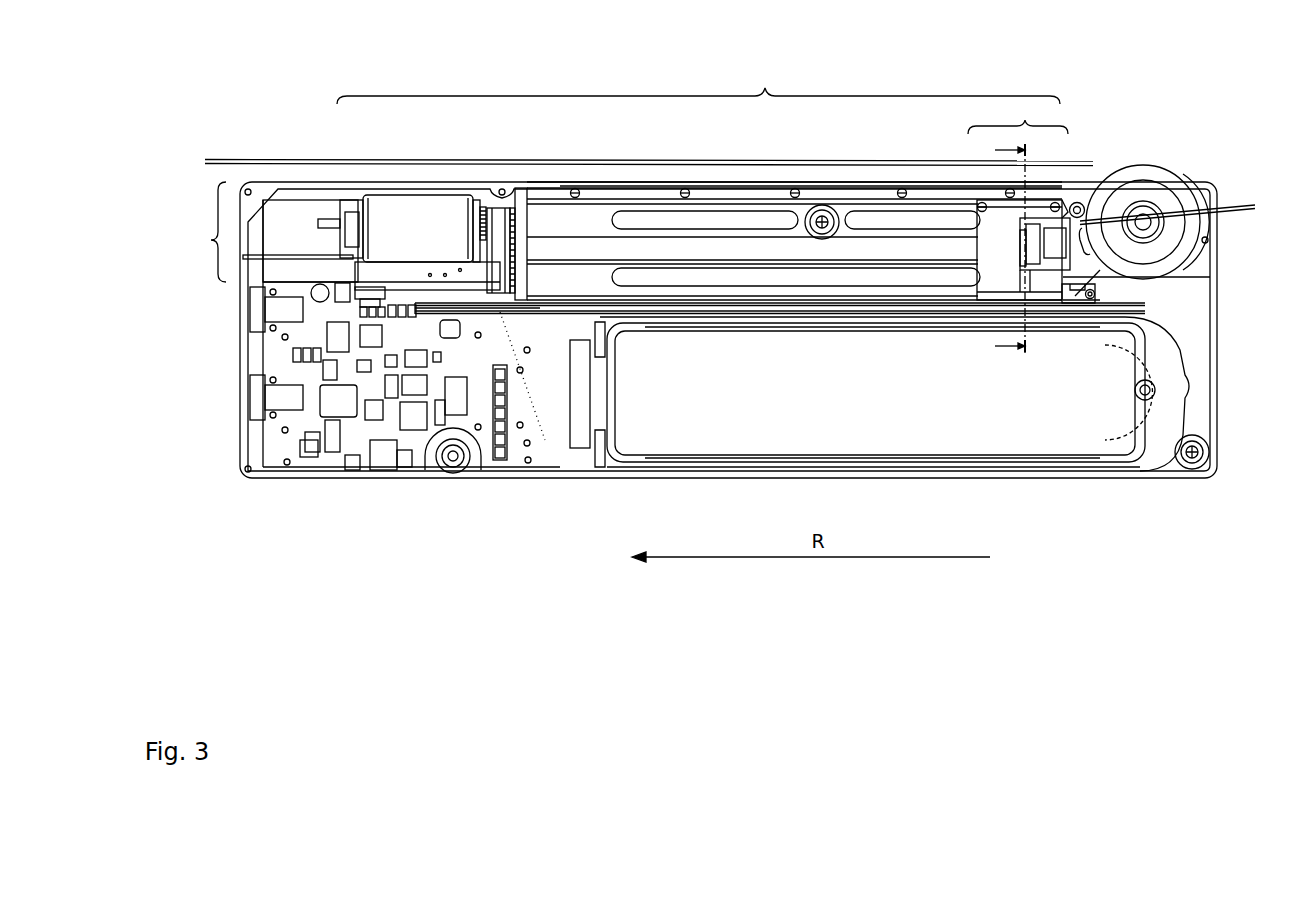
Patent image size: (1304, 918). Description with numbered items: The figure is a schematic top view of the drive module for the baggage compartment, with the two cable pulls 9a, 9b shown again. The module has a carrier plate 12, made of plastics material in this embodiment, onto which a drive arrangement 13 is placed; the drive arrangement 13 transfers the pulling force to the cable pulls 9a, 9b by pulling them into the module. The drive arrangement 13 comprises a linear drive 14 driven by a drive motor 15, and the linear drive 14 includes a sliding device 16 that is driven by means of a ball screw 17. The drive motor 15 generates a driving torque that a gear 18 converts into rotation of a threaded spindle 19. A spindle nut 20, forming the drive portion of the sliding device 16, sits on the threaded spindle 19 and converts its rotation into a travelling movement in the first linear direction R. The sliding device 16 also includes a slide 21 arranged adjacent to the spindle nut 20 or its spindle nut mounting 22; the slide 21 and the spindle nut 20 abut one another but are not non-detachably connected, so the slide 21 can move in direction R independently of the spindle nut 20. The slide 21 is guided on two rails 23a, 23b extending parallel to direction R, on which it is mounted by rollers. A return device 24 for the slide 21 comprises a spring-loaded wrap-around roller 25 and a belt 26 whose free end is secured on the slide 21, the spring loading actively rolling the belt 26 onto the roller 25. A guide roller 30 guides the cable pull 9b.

The cable pull 9a is at (1240, 205).
The cable pull 9b is at (221, 158).
The carrier plate 12 is at (1207, 417).
The drive arrangement 13 is at (203, 232).
The linear drive 14 is at (698, 82).
The drive motor 15 is at (428, 238).
The sliding device 16 is at (1018, 228).
The ball screw 17 is at (803, 249).
The gear 18 is at (497, 218).
The threaded spindle 19 is at (663, 260).
The spindle nut 20 is at (1033, 231).
The slide 21 is at (1011, 257).
The spindle nut mounting 22 is at (1033, 231).
The rail 23a is at (605, 192).
The rail 23b is at (904, 311).
The return device 24 is at (503, 307).
The wrap-around roller 25 is at (467, 307).
The belt 26 is at (582, 308).
The guide roller 30 is at (1152, 173).